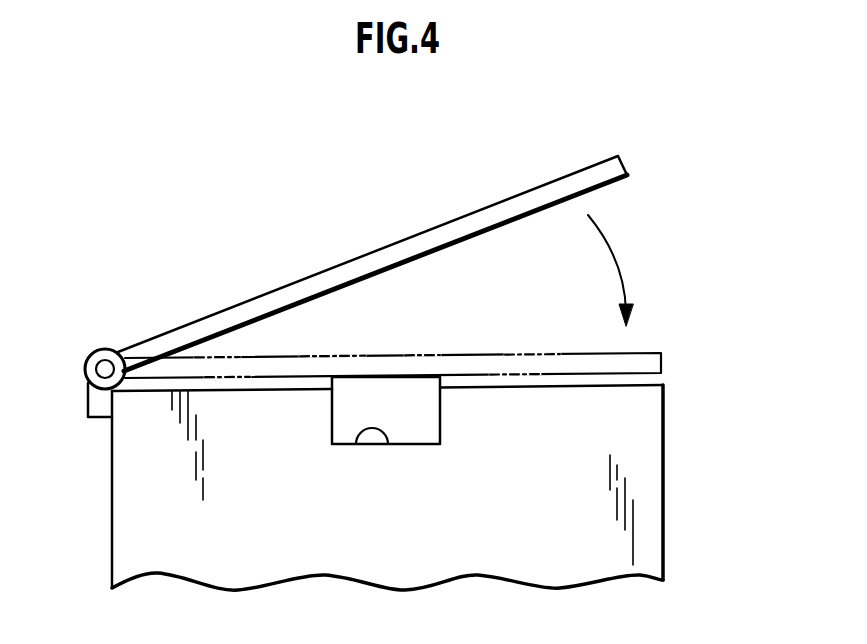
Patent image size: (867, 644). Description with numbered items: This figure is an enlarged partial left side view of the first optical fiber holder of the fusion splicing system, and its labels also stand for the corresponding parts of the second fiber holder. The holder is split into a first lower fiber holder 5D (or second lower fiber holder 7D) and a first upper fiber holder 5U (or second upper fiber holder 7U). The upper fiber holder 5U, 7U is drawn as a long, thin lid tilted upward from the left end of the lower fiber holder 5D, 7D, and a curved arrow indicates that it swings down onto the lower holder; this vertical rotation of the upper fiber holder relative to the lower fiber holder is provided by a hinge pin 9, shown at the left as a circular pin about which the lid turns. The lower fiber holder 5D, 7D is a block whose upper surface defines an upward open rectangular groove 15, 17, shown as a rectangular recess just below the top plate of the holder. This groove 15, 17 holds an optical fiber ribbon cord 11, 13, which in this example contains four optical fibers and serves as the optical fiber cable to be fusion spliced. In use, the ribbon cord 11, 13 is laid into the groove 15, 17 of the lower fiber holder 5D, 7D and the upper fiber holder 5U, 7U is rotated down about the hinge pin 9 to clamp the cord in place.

The hinge pin 9 is at (97, 355).
The first upper fiber holder 5U is at (375, 243).
The second upper fiber holder 7U is at (417, 235).
The first lower fiber holder 5D is at (452, 471).
The second lower fiber holder 7D is at (625, 428).
The optical fiber ribbon cord 11 is at (450, 439).
The optical fiber ribbon cord 13 is at (417, 412).
The upward open rectangular groove 15 is at (390, 493).
The upward open rectangular groove 17 is at (387, 435).